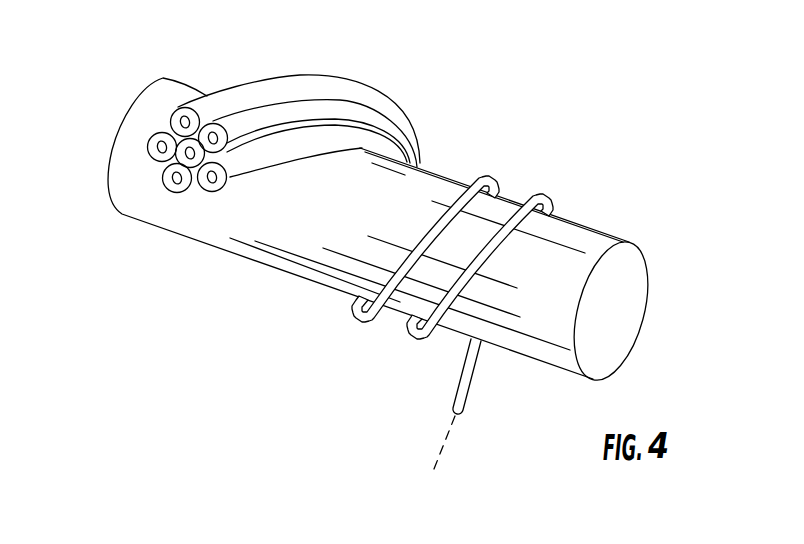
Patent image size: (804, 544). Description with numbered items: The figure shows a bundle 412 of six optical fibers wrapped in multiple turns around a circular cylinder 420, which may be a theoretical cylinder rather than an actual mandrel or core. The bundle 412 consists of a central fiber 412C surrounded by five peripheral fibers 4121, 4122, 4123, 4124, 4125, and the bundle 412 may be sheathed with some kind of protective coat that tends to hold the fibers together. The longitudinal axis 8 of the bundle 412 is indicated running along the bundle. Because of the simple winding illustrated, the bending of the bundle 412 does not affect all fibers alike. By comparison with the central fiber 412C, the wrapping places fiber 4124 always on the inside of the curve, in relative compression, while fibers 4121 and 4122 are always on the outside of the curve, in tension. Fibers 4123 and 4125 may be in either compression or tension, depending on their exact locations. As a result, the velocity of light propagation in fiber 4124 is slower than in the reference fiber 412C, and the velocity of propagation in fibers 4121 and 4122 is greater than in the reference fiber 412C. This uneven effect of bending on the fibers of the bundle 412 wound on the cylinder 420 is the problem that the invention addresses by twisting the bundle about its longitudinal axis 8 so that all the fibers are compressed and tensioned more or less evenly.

The bundle of optical fibers 412 is at (360, 64).
The peripheral fiber 4121 is at (203, 98).
The peripheral fiber 4122 is at (237, 127).
The peripheral fiber 4123 is at (226, 188).
The peripheral fiber 4124 is at (174, 193).
The peripheral fiber 4125 is at (148, 147).
The central fiber 412C is at (176, 151).
The circular cylinder 420 is at (602, 243).
The longitudinal axis 8 is at (440, 457).